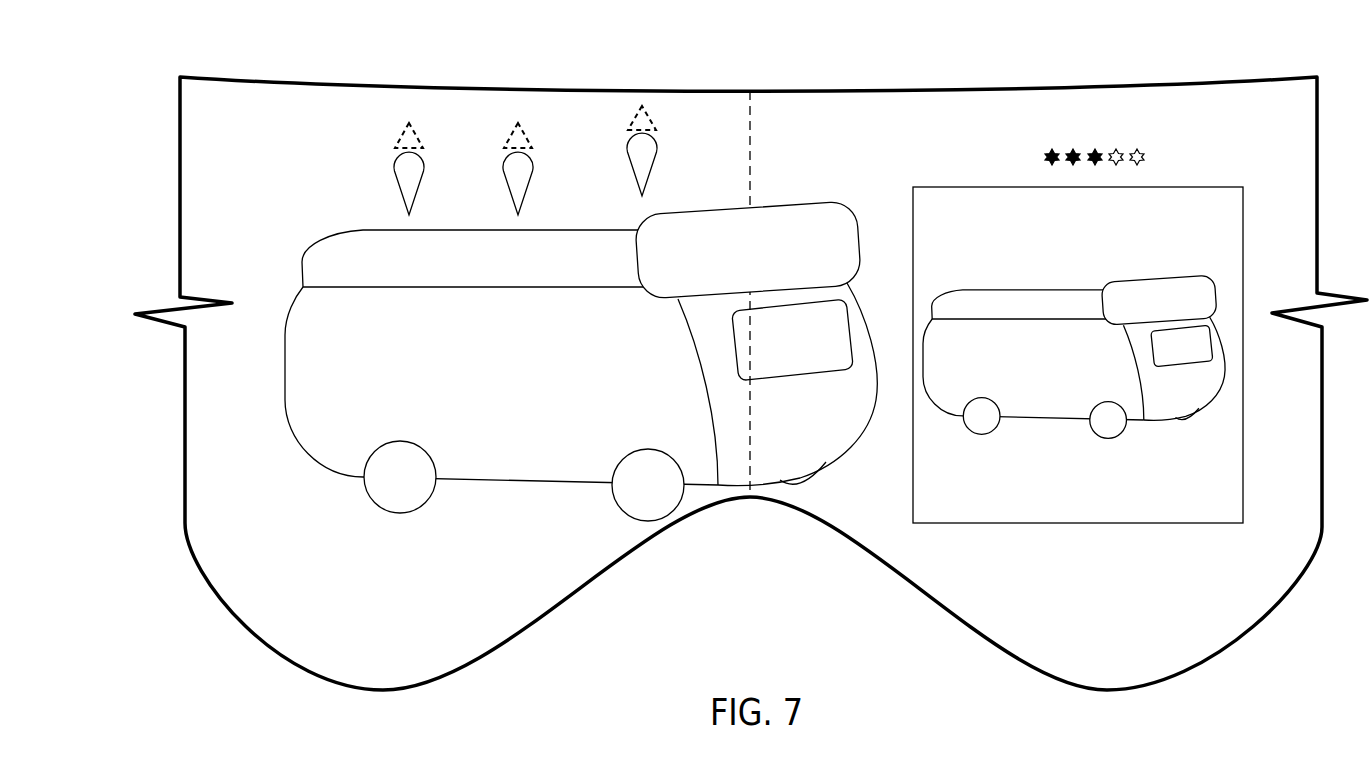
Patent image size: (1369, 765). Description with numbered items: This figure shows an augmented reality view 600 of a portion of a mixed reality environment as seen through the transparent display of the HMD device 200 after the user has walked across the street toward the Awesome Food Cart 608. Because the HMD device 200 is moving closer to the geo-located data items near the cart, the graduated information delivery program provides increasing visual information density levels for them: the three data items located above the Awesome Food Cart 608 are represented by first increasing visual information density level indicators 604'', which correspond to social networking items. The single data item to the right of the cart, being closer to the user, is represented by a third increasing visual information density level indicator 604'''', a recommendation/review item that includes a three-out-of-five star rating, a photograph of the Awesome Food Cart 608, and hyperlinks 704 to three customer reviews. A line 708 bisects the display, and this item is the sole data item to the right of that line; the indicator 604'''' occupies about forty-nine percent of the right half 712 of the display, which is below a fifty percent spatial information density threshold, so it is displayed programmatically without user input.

The augmented reality view 600 is at (314, 112).
The HMD device 200 is at (708, 90).
The first increasing visual information density level indicators 604'' is at (525, 160).
The third increasing visual information density level indicator 604'''' is at (1079, 412).
The Awesome Food Cart 608 is at (305, 452).
The hyperlinks 704 is at (972, 576).
The line 708 is at (752, 177).
The right half 712 is at (845, 139).